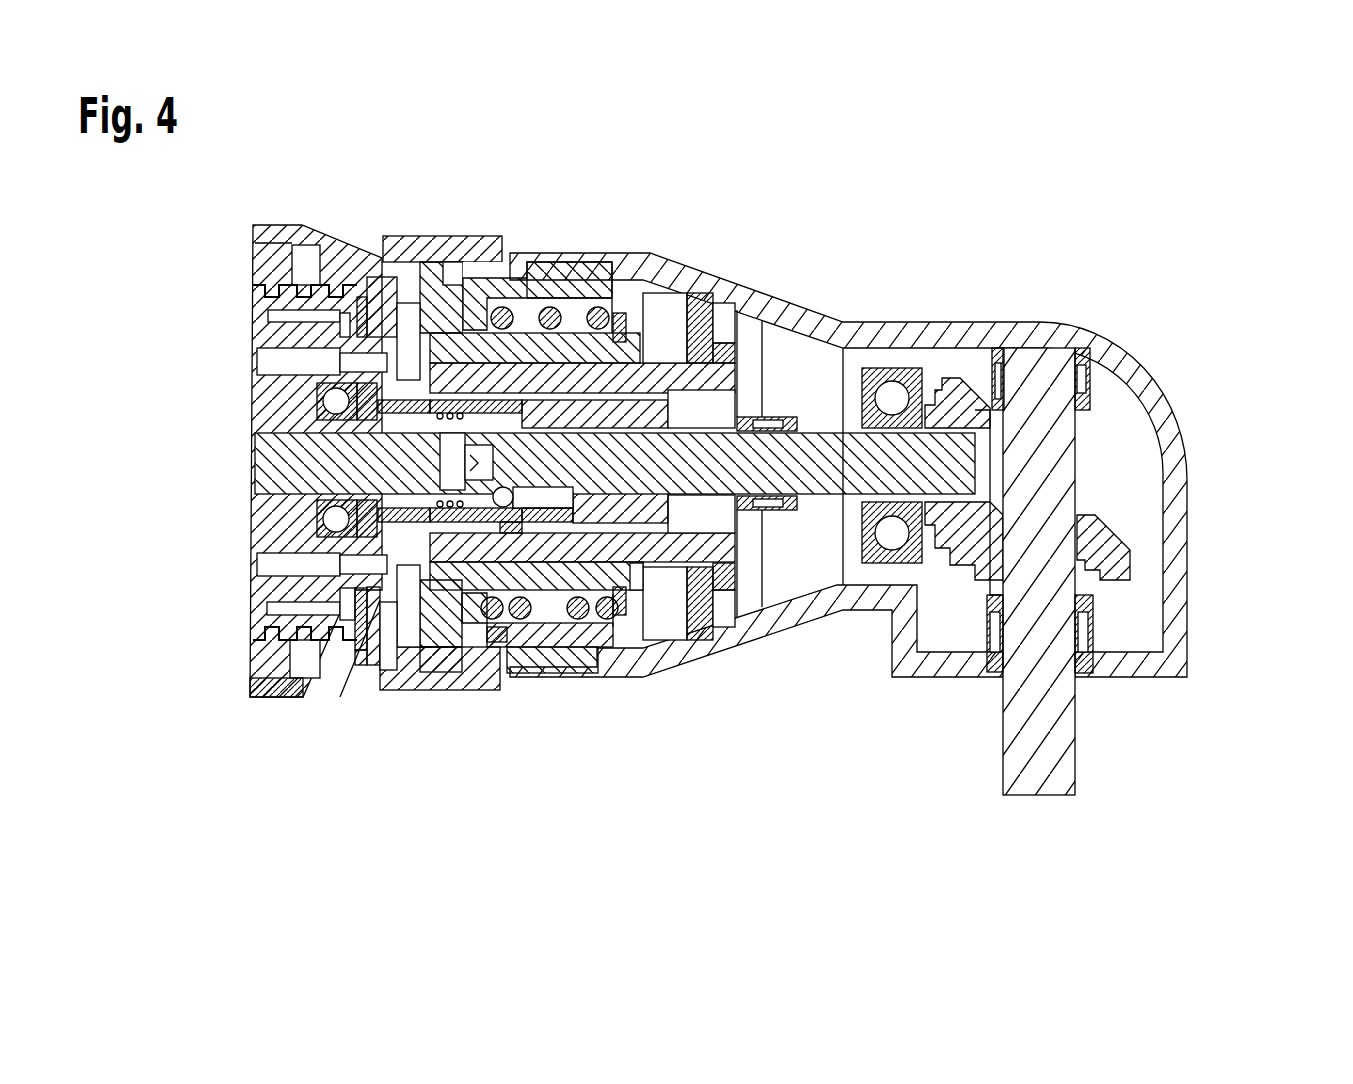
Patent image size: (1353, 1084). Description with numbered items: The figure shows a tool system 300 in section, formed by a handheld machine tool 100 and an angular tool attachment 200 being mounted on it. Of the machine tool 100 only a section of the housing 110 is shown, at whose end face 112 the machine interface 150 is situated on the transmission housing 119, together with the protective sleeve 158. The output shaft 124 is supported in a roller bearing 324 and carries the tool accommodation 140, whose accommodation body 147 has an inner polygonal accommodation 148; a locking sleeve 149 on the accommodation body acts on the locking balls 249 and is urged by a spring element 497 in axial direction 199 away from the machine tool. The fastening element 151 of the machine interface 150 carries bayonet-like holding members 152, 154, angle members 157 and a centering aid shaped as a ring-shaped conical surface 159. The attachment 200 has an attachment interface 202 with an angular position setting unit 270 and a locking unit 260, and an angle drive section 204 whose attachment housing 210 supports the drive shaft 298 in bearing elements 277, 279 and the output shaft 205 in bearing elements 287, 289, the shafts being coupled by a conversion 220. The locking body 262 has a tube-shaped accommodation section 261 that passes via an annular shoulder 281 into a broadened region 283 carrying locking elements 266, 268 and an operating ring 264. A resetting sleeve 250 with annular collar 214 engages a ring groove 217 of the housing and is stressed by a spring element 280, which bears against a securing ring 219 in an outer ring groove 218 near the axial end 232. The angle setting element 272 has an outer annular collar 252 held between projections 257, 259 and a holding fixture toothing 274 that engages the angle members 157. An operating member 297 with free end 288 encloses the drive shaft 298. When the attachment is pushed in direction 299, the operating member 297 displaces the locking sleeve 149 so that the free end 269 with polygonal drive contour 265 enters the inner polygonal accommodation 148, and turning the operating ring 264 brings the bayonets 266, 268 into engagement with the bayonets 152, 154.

The handheld machine tool 100 is at (240, 730).
The housing 110 is at (273, 262).
The end face 112 is at (300, 292).
The transmission housing 119 is at (277, 585).
The output shaft 124 is at (300, 462).
The tool accommodation 140 is at (525, 540).
The accommodation body 147 is at (370, 402).
The inner polygonal accommodation 148 is at (360, 445).
The locking sleeve 149 is at (320, 387).
The machine interface 150 is at (345, 662).
The fastening element 151 is at (320, 672).
The holding member 152 is at (462, 300).
The holding member 154 is at (366, 645).
The holding fixture member 157 is at (478, 600).
The protective sleeve 158 is at (280, 692).
The ring-shaped conical surface 159 is at (340, 575).
The axial direction 199 is at (700, 840).
The tool attachment 200 is at (1160, 302).
The attachment interface 202 is at (380, 815).
The angle drive section 204 is at (912, 740).
The output shaft 205 is at (1045, 765).
The attachment housing 210 is at (1172, 456).
The annular collar 214 is at (470, 530).
The ring groove 217 is at (540, 650).
The outer ring groove 218 is at (583, 290).
The securing ring 219 is at (620, 340).
The conversion 220 is at (960, 600).
The axial end 232 is at (665, 360).
The locking balls 249 is at (475, 468).
The resetting sleeve 250 is at (582, 545).
The outer annular collar 252 is at (705, 600).
The projection 257 is at (742, 300).
The projection 259 is at (780, 330).
The locking unit 260 is at (412, 700).
The tube-shaped accommodation section 261 is at (560, 600).
The locking body 262 is at (440, 282).
The operating ring 264 is at (395, 255).
The polygonal drive contour 265 is at (570, 292).
The locking element 266 is at (410, 305).
The locking element 268 is at (385, 650).
The free end 269 is at (695, 310).
The angular position setting unit 270 is at (505, 332).
The angle setting element 272 is at (645, 600).
The holding fixture toothing 274 is at (400, 358).
The bearing element 277 is at (775, 520).
The bearing element 279 is at (905, 372).
The spring element 280 is at (540, 262).
The annular shoulder 281 is at (472, 660).
The broadened region 283 is at (438, 655).
The bearing element 287 is at (1080, 380).
The free end 288 is at (620, 600).
The bearing element 289 is at (1085, 625).
The operating member 297 is at (690, 600).
The drive shaft 298 is at (818, 455).
The direction 299 is at (268, 183).
The tool system 300 is at (1022, 225).
The roller bearing 324 is at (330, 515).
The spring element 497 is at (330, 540).